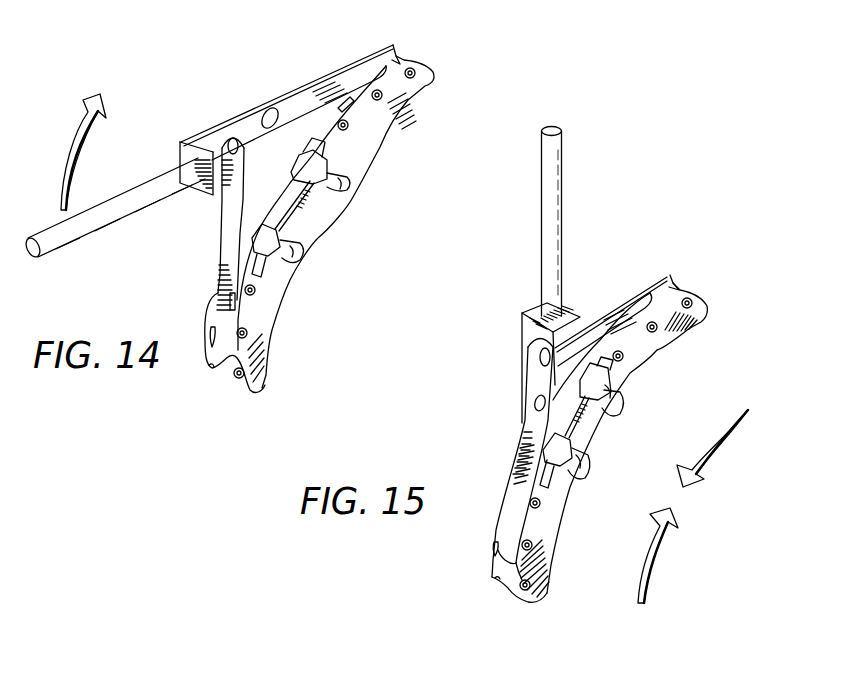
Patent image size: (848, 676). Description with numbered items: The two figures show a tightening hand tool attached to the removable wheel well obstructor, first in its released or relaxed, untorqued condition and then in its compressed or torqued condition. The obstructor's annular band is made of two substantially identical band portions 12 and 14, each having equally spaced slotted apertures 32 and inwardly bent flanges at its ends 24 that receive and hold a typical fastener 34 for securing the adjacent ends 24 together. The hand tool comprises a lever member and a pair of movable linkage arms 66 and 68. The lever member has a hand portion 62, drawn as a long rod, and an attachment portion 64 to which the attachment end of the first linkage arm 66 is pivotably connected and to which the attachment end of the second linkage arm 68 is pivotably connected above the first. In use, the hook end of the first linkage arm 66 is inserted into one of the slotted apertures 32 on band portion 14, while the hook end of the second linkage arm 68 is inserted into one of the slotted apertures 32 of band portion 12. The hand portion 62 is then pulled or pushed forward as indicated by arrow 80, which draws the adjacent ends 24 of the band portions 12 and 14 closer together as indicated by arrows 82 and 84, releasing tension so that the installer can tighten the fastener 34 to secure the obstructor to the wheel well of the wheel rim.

In FIG. 14, the band portion 12 is at (430, 78).
In FIG. 15, the band portion 12 is at (703, 300).
In FIG. 14, the band portion 14 is at (257, 387).
In FIG. 15, the band portion 14 is at (543, 597).
In FIG. 14, the ends 24 is at (320, 181).
In FIG. 15, the ends 24 is at (597, 410).
In FIG. 14, the slotted apertures 32 is at (412, 66).
In FIG. 14, the fastener 34 is at (300, 208).
In FIG. 15, the fastener 34 is at (577, 430).
In FIG. 14, the hand portion 62 is at (78, 242).
In FIG. 15, the hand portion 62 is at (553, 208).
In FIG. 14, the attachment portion 64 is at (205, 141).
In FIG. 15, the attachment portion 64 is at (551, 363).
In FIG. 14, the first linkage arm 66 is at (217, 248).
In FIG. 15, the first linkage arm 66 is at (530, 437).
In FIG. 14, the second linkage arm 68 is at (305, 92).
In FIG. 15, the second linkage arm 68 is at (615, 325).
In FIG. 14, the arrow 80 is at (76, 118).
In FIG. 15, the arrow 82 is at (708, 465).
In FIG. 15, the arrow 84 is at (660, 547).